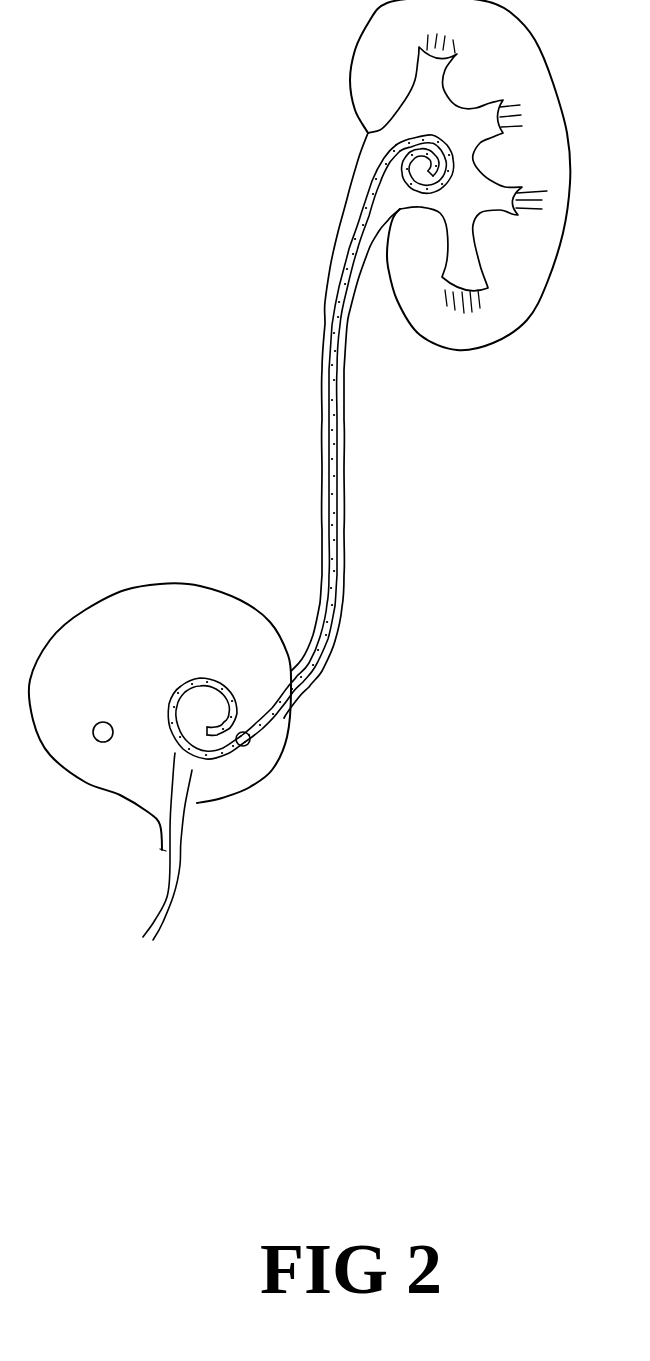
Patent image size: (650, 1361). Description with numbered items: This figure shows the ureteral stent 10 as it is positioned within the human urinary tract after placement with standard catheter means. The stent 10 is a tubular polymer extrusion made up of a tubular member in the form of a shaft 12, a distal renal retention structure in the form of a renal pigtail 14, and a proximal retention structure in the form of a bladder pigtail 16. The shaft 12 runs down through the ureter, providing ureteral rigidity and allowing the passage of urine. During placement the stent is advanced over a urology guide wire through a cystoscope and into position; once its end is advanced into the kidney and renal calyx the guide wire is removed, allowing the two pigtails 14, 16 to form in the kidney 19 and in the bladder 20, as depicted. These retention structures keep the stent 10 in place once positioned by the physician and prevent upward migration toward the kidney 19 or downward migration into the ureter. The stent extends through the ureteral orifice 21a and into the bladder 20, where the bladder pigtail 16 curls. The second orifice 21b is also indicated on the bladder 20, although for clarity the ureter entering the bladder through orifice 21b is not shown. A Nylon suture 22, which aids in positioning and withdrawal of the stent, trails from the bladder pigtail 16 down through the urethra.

The stent 10 is at (302, 439).
The shaft 12 is at (340, 551).
The renal pigtail 14 is at (446, 136).
The bladder pigtail 16 is at (173, 694).
The kidney 19 is at (530, 315).
The bladder 20 is at (95, 592).
The ureteral orifice 21a is at (249, 746).
The orifice 21b is at (98, 741).
The Nylon suture 22 is at (193, 803).